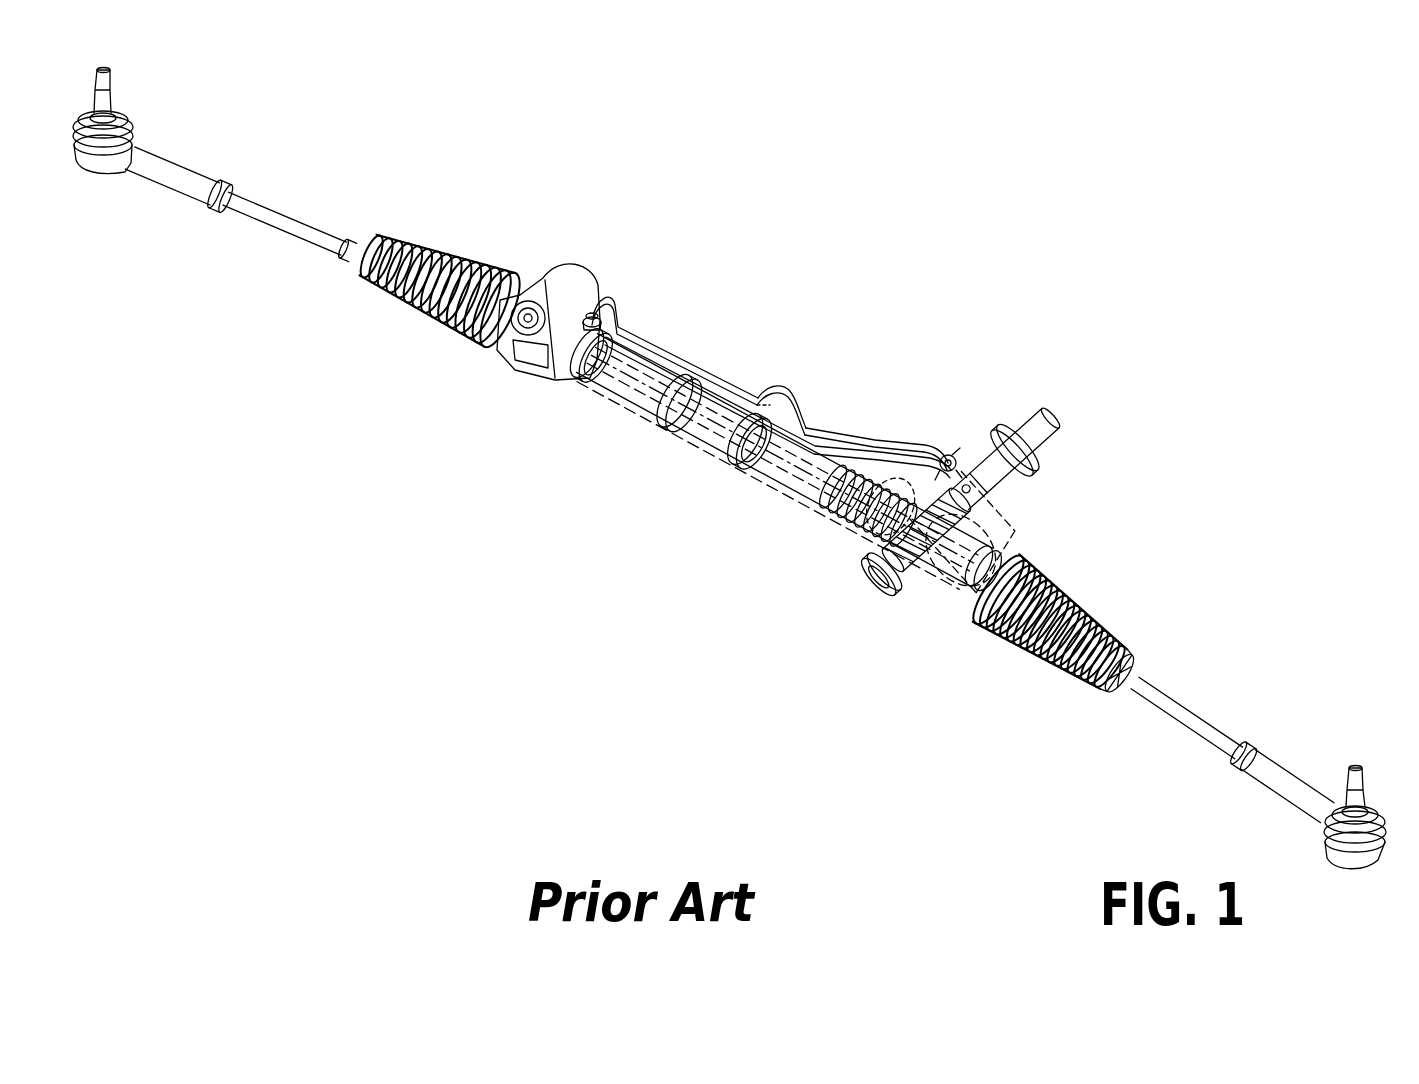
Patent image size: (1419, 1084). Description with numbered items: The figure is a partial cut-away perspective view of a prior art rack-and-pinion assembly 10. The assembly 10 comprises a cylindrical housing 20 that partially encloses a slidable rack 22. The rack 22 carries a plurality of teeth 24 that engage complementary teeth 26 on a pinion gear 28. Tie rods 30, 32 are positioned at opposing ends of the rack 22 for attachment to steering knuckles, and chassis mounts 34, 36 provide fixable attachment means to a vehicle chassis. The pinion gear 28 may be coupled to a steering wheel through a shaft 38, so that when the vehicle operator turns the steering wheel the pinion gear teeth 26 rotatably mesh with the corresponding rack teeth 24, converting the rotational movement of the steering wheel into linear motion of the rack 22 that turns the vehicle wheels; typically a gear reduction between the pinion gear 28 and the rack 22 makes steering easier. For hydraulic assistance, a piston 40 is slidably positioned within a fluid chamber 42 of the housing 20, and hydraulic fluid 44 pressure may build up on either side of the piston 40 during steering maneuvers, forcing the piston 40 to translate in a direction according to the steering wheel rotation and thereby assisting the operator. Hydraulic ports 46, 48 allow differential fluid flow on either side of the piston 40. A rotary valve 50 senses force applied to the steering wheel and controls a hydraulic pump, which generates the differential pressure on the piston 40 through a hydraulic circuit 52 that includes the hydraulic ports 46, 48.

The rack-and-pinion assembly 10 is at (890, 241).
The cylindrical housing 20 is at (605, 403).
The rack 22 is at (812, 494).
The teeth 24 is at (870, 477).
The teeth 26 is at (912, 560).
The pinion gear 28 is at (950, 510).
The tie rod 30 is at (197, 183).
The tie rod 32 is at (1270, 775).
The chassis mount 34 is at (525, 322).
The chassis mount 36 is at (936, 565).
The shaft 38 is at (1038, 426).
The piston 40 is at (660, 402).
The fluid chamber 42 is at (700, 388).
The hydraulic fluid 44 is at (657, 357).
The hydraulic port 46 is at (598, 313).
The hydraulic port 48 is at (770, 392).
The rotary valve 50 is at (955, 458).
The hydraulic circuit 52 is at (823, 418).